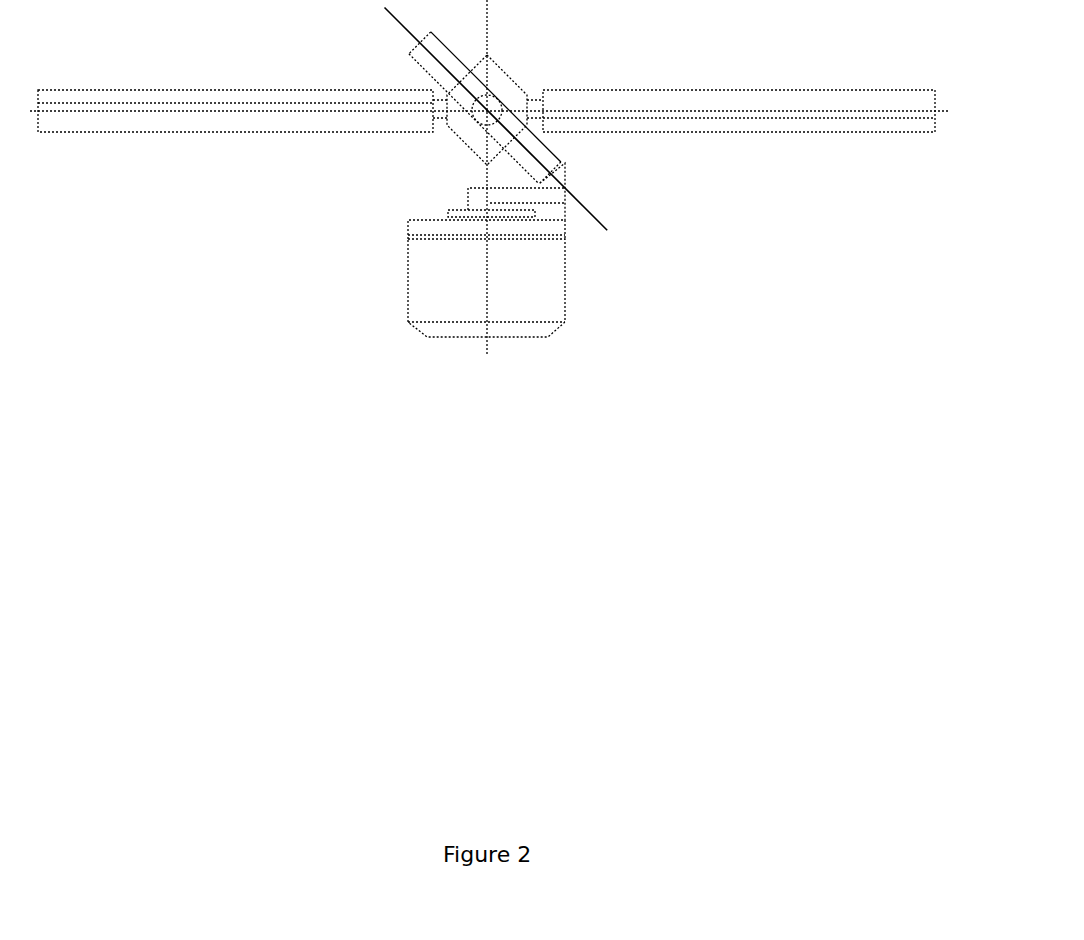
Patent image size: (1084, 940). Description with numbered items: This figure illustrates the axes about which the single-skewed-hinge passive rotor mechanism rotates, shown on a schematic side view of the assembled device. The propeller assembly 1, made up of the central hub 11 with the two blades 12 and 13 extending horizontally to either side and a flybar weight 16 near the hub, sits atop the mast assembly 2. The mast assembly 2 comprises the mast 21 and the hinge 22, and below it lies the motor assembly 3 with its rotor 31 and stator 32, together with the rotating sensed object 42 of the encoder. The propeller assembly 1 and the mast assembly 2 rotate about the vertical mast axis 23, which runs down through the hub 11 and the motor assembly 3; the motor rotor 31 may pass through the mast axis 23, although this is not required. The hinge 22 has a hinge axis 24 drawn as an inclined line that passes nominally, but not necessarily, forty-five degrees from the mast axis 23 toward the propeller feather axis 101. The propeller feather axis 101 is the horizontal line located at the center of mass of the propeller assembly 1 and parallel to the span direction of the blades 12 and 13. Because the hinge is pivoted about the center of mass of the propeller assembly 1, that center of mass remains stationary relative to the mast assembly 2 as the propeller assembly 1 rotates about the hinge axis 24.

The propeller assembly 1 is at (489, 88).
The mast assembly 2 is at (491, 177).
The motor assembly 3 is at (571, 279).
The hub 11 is at (596, 83).
The blade 12 is at (235, 132).
The blade 13 is at (739, 88).
The flybar weight 16 is at (645, 136).
The mast 21 is at (392, 219).
The hinge 22 is at (653, 187).
The mast axis 23 is at (351, 177).
The hinge axis 24 is at (411, 117).
The rotor 31 is at (586, 288).
The stator 32 is at (587, 258).
The rotating sensed object 42 is at (607, 231).
The propeller feather axis 101 is at (489, 78).